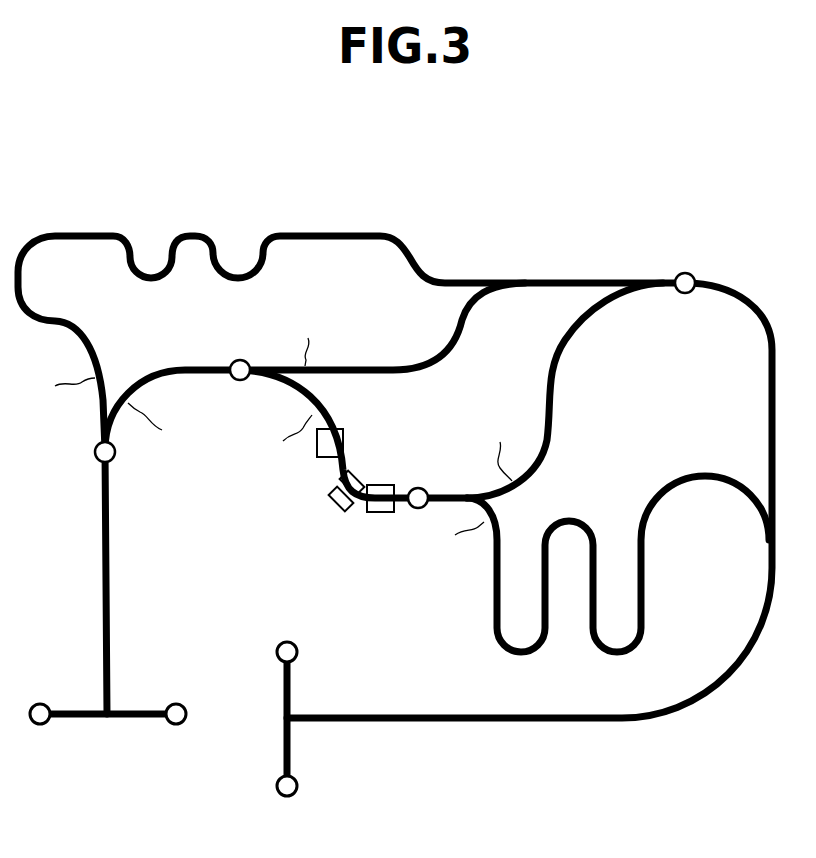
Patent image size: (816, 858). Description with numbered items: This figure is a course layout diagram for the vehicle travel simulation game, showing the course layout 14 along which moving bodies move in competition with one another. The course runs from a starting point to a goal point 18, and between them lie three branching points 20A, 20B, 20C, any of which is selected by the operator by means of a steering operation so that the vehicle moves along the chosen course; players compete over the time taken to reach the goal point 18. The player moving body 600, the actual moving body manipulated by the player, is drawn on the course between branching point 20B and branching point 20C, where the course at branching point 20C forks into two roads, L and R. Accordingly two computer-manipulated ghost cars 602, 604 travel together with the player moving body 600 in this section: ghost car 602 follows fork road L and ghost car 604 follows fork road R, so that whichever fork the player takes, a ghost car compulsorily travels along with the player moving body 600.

The course layout 14 is at (442, 239).
The goal point 18 is at (58, 720).
The branching point 20A is at (116, 455).
The branching point 20B is at (240, 359).
The branching point 20C is at (416, 509).
The player moving body 600 is at (344, 435).
The ghost car 602 is at (359, 476).
The ghost car 604 is at (393, 485).